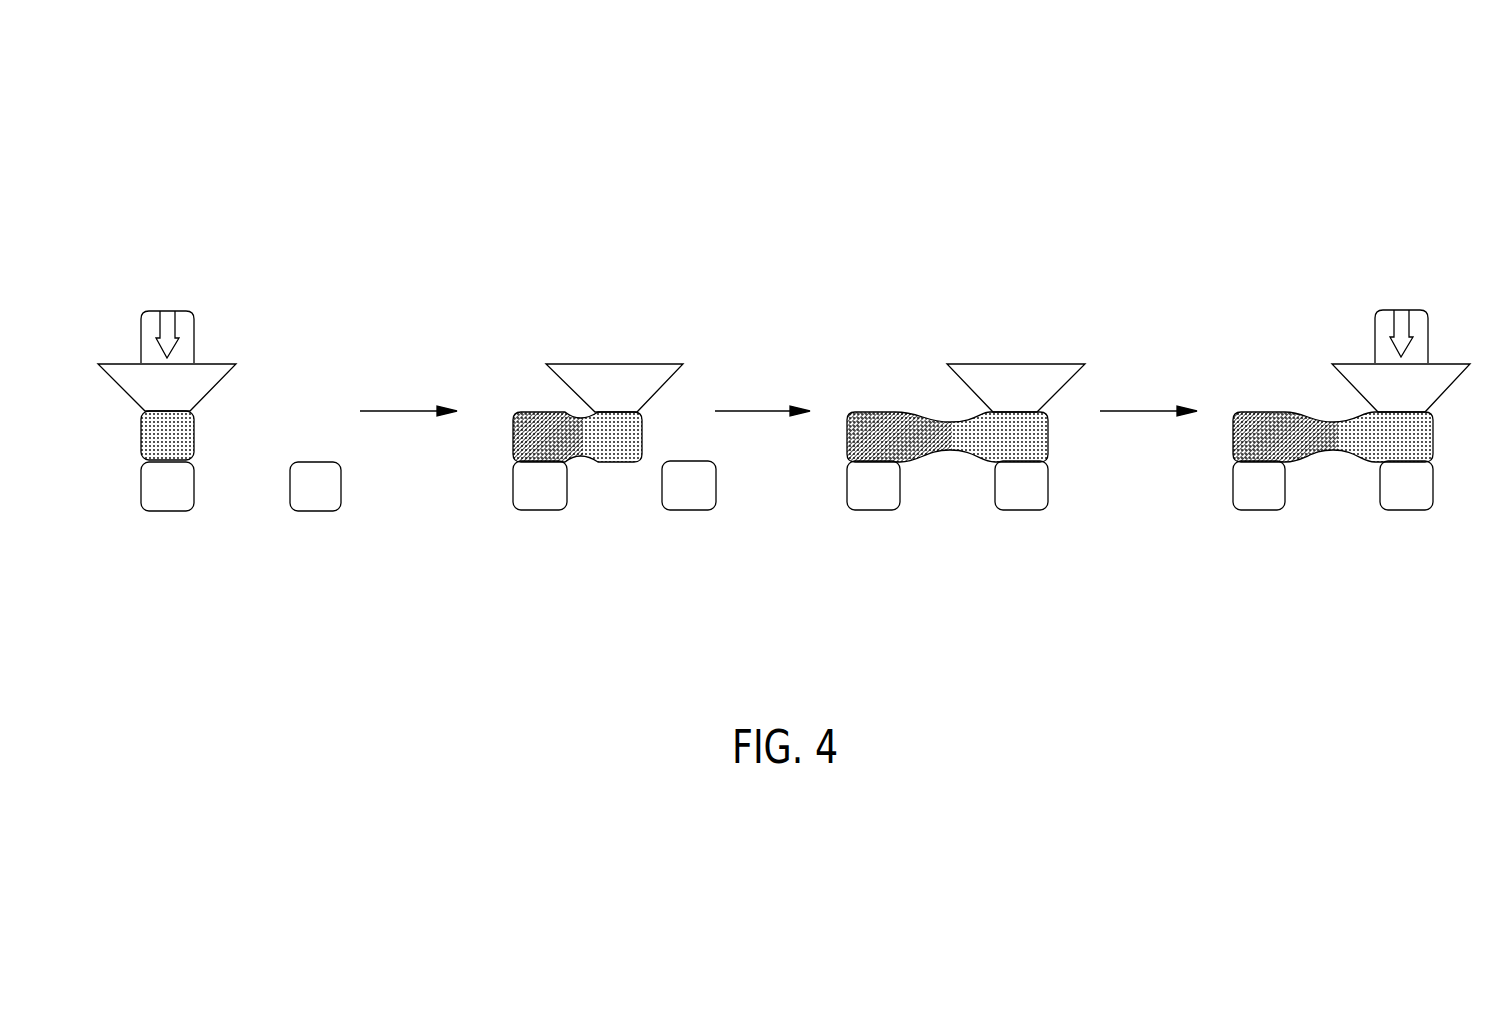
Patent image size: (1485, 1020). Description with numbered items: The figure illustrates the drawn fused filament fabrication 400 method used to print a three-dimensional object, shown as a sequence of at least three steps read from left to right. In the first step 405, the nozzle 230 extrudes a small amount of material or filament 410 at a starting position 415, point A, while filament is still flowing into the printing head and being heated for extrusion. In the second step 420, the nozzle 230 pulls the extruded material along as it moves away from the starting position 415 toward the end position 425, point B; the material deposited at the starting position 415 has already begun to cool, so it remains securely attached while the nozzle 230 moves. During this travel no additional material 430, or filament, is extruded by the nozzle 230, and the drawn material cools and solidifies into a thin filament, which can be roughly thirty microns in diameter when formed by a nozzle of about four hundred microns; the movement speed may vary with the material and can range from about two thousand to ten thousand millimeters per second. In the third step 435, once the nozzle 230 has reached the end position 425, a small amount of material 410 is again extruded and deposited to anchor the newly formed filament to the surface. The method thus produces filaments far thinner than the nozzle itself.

The drawn fused filament fabrication method 400 is at (190, 185).
The nozzle 230 is at (205, 395).
The first step 405 is at (98, 618).
The material or filament 410 is at (167, 311).
The starting position 415 is at (167, 512).
The second step 420 is at (1085, 618).
The end position 425 is at (316, 512).
The no additional material 430 is at (615, 318).
The third step 435 is at (1225, 618).